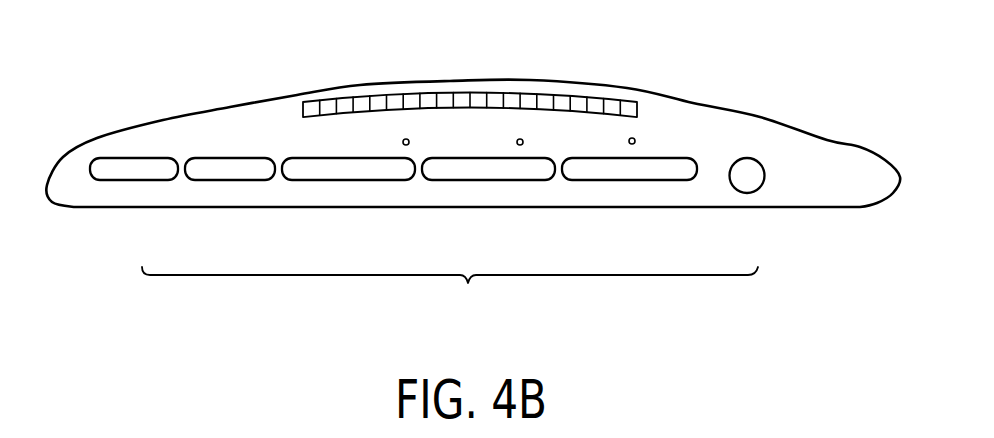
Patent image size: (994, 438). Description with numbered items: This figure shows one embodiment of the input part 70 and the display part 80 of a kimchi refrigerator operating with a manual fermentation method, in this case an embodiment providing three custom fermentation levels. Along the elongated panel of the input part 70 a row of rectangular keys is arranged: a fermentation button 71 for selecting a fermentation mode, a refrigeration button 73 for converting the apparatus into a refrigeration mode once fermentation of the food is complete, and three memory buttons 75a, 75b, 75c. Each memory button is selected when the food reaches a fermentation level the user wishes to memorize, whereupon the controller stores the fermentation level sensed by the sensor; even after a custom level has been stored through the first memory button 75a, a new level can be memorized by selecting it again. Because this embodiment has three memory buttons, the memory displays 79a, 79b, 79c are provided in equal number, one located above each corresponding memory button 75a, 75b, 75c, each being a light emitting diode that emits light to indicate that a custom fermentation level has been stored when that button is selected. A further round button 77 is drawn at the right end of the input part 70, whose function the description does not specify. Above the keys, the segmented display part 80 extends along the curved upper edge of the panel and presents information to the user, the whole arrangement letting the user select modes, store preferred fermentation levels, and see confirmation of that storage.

The input part 70 is at (450, 295).
The fermentation button 71 is at (130, 181).
The refrigeration button 73 is at (225, 181).
The first memory button 75a is at (345, 181).
The third input key b 75b is at (483, 181).
The third input key c 75c is at (632, 181).
The round input button 77 is at (743, 193).
The indicator light a 79a is at (409, 142).
The indicator light b 79b is at (523, 142).
The indicator light c 79c is at (635, 141).
The display part 80 is at (445, 100).